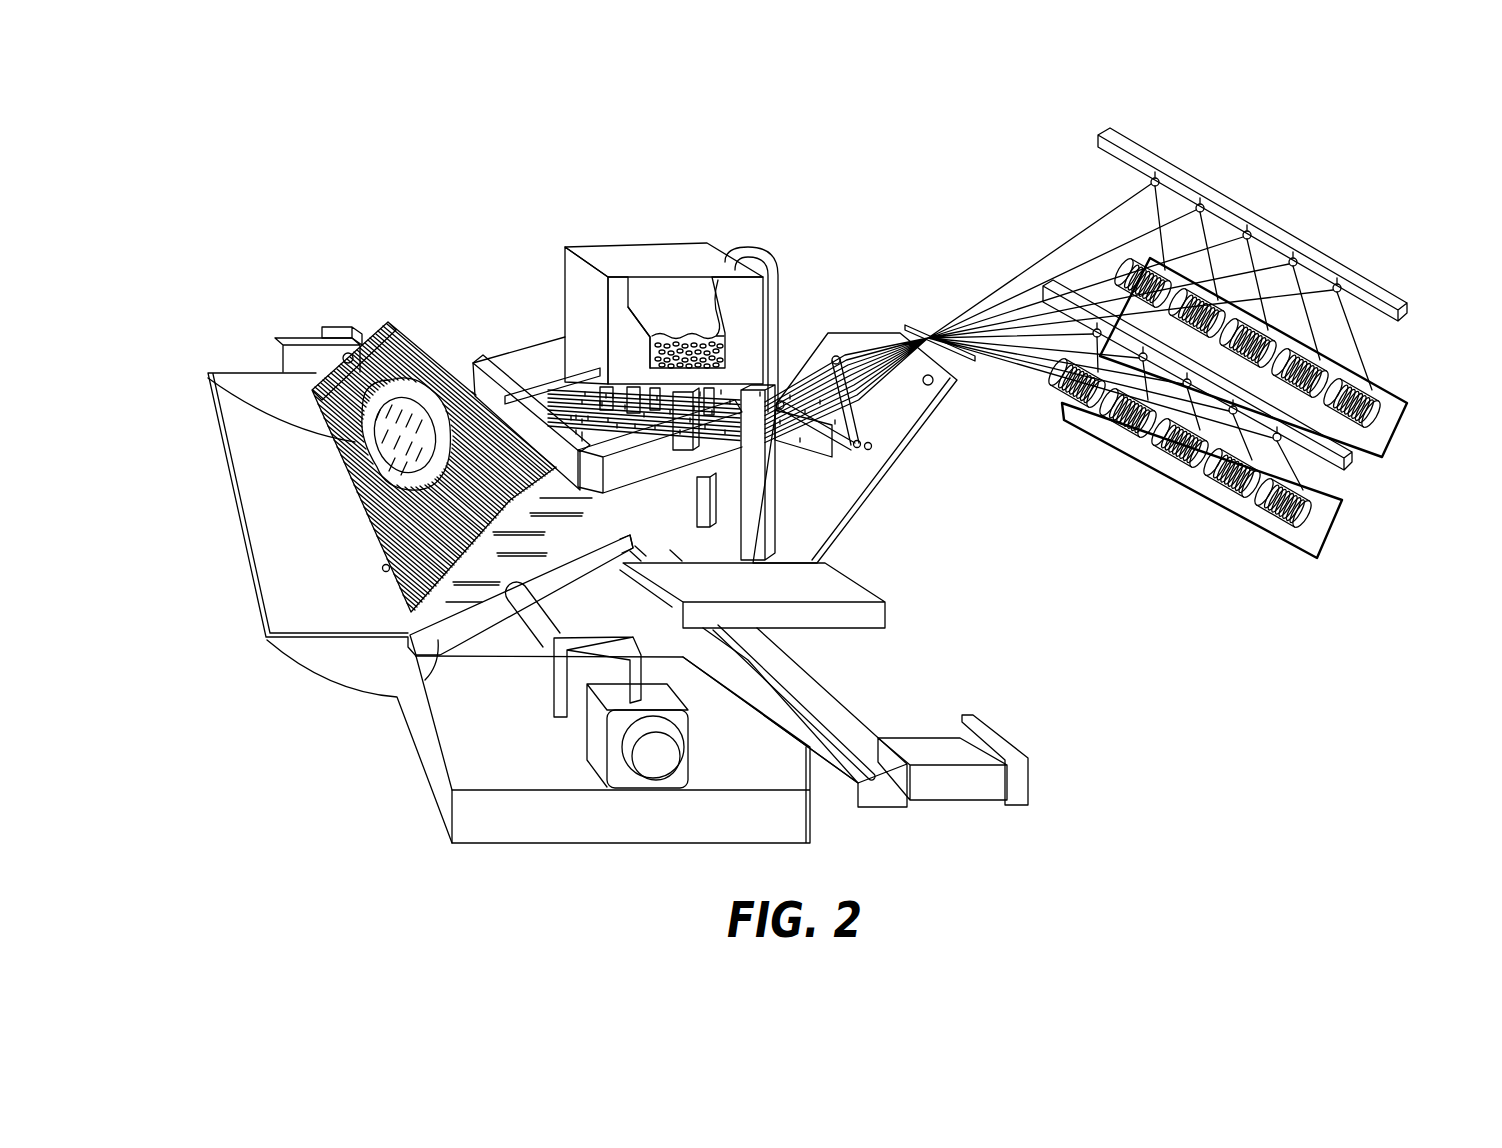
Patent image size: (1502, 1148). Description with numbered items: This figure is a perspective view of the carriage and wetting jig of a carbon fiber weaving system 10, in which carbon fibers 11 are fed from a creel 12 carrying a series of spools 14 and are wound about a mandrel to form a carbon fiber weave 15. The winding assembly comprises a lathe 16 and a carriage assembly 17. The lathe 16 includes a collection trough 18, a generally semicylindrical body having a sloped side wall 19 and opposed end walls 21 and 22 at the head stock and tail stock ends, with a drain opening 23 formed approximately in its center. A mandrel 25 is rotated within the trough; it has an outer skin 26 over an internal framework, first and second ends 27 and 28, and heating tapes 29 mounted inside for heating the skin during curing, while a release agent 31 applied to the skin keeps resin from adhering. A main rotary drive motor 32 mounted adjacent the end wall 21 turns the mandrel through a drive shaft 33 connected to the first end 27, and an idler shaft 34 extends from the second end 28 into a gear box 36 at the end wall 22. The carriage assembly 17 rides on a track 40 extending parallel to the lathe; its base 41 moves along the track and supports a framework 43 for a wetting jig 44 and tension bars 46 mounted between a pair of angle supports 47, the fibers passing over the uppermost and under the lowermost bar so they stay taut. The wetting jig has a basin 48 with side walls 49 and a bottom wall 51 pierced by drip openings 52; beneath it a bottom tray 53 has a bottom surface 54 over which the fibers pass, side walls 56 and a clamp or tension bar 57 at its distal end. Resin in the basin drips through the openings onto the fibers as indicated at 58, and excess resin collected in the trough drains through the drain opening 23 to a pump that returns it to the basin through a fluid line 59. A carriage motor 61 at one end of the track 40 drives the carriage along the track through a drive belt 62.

The carbon fiber weaving system 10 is at (904, 260).
The carbon fibers 11 is at (1090, 222).
The creel 12 is at (1402, 386).
The spools 14 is at (1352, 450).
The carbon fiber weave 15 is at (423, 372).
The lathe 16 is at (235, 576).
The carriage assembly 17 is at (798, 258).
The collection trough 18 is at (308, 655).
The sloped side wall 19 is at (258, 607).
The end wall 21 is at (247, 382).
The end wall 22 is at (458, 658).
The drain opening 23 is at (382, 568).
The mandrel 25 is at (595, 548).
The outer skin 26 is at (376, 449).
The first end 27 is at (440, 642).
The second end 28 is at (383, 337).
The heating tapes 29 is at (378, 437).
The release agent 31 is at (588, 530).
The main rotary drive motor 32 is at (580, 707).
The drive shaft 33 is at (540, 628).
The idler shaft 34 is at (342, 360).
The gear box 36 is at (344, 328).
The track 40 is at (843, 718).
The base 41 is at (855, 592).
The framework 43 is at (533, 392).
The wetting jig 44 is at (688, 242).
The tension bars 46 is at (839, 358).
The angle supports 47 is at (908, 420).
The basin 48 is at (601, 262).
The side walls 49 is at (680, 291).
The bottom wall 51 is at (706, 372).
The drip openings 52 is at (668, 374).
The bottom tray 53 is at (714, 465).
The bottom surface 54 is at (563, 408).
The side walls 56 is at (645, 474).
The tension bar 57 is at (483, 368).
The resin material flow 58 is at (767, 424).
The fluid line 59 is at (748, 253).
The carriage motor 61 is at (967, 750).
The drive belt 62 is at (850, 742).